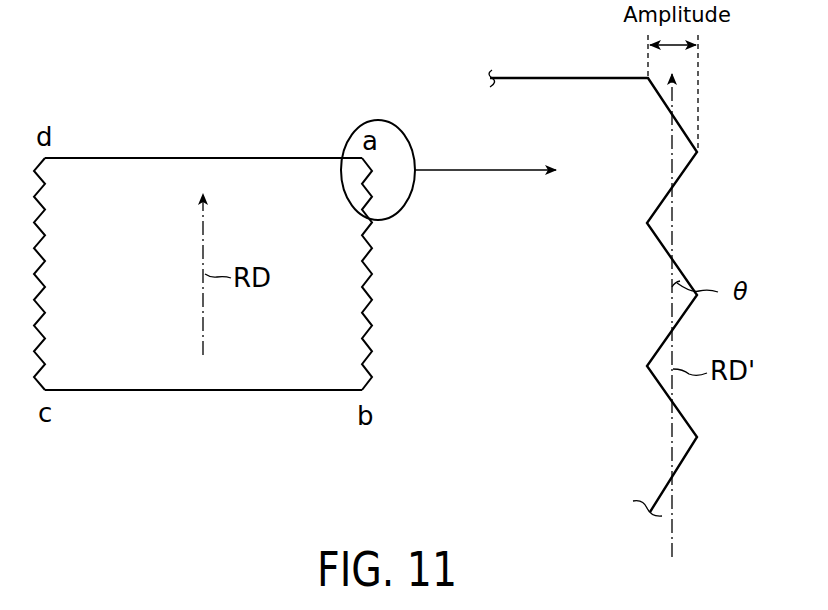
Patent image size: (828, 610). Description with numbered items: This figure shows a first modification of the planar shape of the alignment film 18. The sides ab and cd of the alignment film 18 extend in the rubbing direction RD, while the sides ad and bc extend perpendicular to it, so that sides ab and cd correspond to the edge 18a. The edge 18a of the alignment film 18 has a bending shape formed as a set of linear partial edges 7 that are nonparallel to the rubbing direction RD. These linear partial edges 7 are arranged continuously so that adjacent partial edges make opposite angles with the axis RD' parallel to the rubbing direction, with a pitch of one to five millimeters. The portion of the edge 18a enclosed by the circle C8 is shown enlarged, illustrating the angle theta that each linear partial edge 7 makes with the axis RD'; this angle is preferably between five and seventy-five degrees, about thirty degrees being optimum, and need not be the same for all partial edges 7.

The alignment film 18 is at (161, 158).
The linear partial edge 7 is at (368, 196).
The edge 18a is at (375, 313).
The circle C8 is at (414, 142).